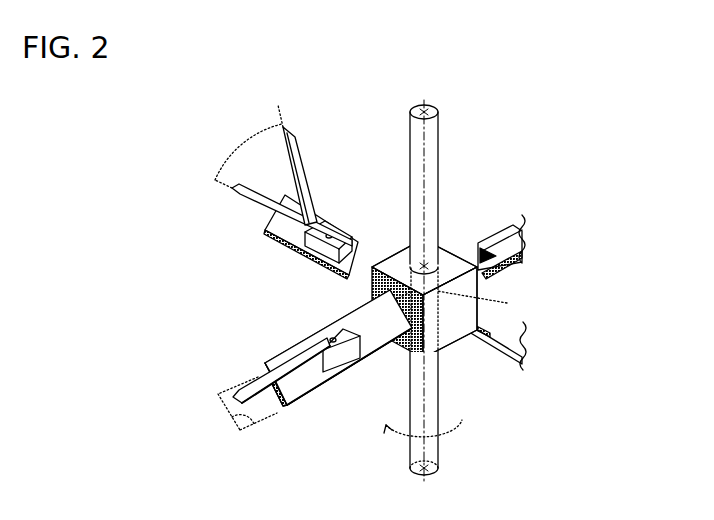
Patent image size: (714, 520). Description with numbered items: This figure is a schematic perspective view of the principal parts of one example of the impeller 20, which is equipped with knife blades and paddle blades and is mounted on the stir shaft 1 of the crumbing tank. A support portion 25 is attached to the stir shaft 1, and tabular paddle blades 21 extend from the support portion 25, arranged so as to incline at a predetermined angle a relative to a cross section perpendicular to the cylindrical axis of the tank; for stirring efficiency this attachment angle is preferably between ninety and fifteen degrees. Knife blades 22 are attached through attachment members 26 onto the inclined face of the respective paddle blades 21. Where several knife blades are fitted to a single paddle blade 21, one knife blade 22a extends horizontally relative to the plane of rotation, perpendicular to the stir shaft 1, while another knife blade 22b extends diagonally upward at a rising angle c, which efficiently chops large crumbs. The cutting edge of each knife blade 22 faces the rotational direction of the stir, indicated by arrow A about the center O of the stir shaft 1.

The stir shaft 1 is at (428, 161).
The impeller 20 is at (573, 212).
The paddle blade 21 is at (362, 253).
The knife blade 22 is at (156, 100).
The knife blade 22a is at (248, 197).
The knife blade 22b is at (292, 141).
The support portion 25 is at (448, 264).
The attachment member 26 is at (322, 252).